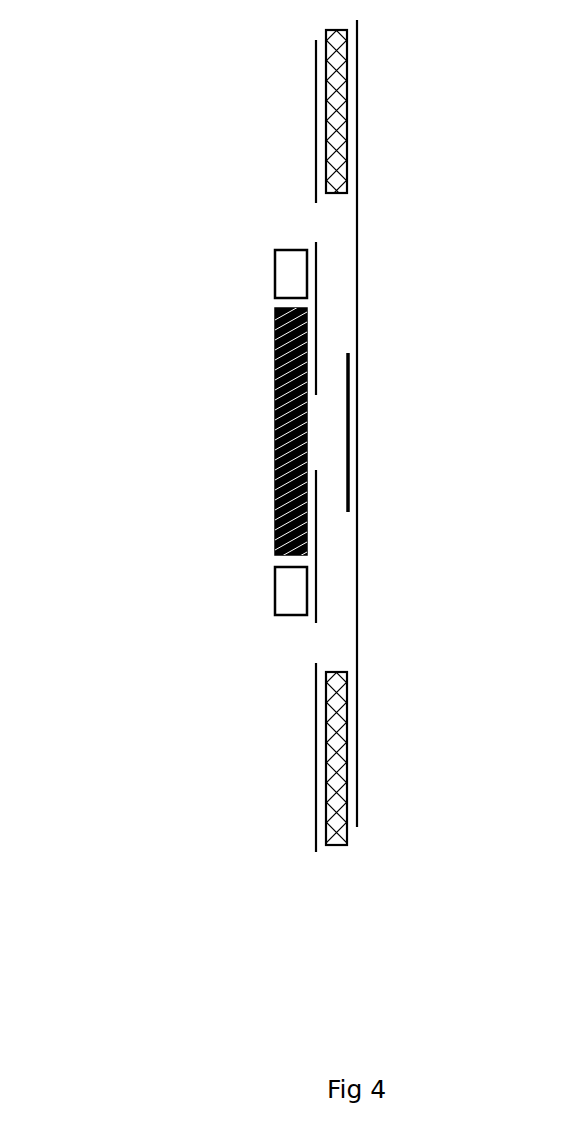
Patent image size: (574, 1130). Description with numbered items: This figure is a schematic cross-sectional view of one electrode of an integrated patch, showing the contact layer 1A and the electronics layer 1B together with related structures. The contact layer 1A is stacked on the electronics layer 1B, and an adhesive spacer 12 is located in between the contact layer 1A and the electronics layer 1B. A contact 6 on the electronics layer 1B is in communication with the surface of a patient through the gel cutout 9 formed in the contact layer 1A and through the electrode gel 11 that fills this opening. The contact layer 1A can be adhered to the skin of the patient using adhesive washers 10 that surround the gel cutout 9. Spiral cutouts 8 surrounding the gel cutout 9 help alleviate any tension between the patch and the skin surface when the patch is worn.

The contact layer 1A is at (316, 146).
The electronics layer 1B is at (357, 280).
The contact 6 is at (348, 443).
The spiral cutouts 8 is at (320, 230).
The gel cutout 9 is at (313, 438).
The adhesive washers 10 is at (287, 278).
The electrode gel 11 is at (275, 421).
The adhesive spacer 12 is at (345, 90).